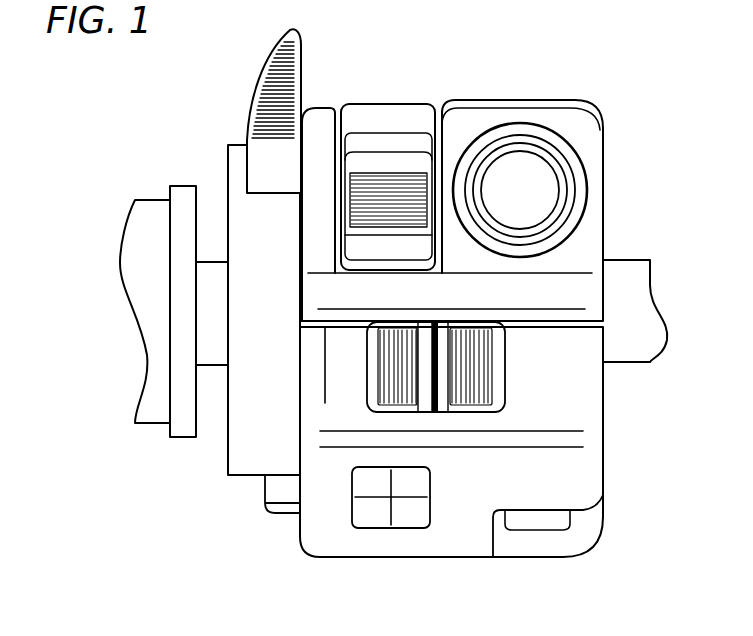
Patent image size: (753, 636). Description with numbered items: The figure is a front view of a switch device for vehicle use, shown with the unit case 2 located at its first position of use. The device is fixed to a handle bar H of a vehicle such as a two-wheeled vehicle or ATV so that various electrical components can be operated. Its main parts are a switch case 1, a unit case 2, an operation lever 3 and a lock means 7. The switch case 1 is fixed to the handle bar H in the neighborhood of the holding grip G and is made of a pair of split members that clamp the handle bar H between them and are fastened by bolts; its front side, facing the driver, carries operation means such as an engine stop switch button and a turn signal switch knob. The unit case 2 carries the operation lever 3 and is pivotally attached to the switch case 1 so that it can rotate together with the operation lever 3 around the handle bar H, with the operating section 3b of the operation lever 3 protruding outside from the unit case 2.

The switch case 1 is at (563, 120).
The unit case 2 is at (228, 160).
The operation lever 3 is at (261, 111).
The operating section 3b is at (256, 77).
The lock means 7 is at (265, 490).
The holding grip G is at (153, 425).
The handle bar H is at (625, 268).